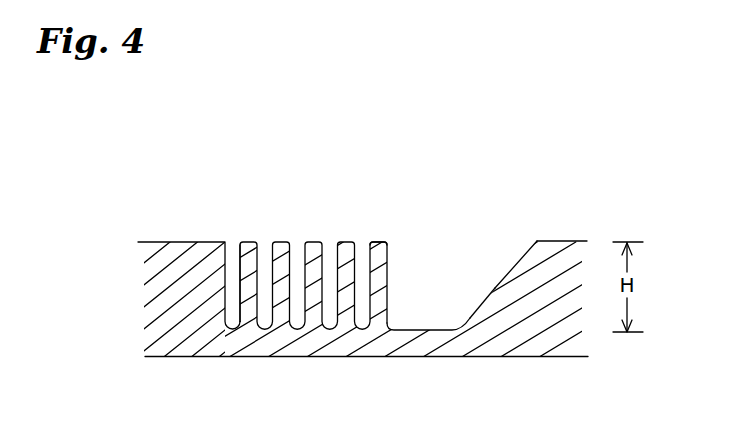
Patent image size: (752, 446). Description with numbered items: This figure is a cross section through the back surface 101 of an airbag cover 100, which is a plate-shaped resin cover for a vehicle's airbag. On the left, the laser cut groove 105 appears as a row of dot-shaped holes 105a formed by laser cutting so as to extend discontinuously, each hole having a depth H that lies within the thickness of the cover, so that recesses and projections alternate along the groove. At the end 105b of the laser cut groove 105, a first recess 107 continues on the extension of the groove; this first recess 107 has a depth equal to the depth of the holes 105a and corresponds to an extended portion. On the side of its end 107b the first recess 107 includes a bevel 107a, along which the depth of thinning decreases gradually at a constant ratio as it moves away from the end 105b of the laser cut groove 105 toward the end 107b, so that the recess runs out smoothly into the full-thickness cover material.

The airbag cover 100 is at (380, 159).
The back surface 101 is at (173, 241).
The laser cut groove 105 is at (387, 229).
The hole 105a is at (240, 275).
The end of the laser cut groove 105b is at (387, 242).
The first recess 107 is at (525, 229).
The bevel 107a is at (495, 288).
The end of the first recess 107b is at (537, 241).